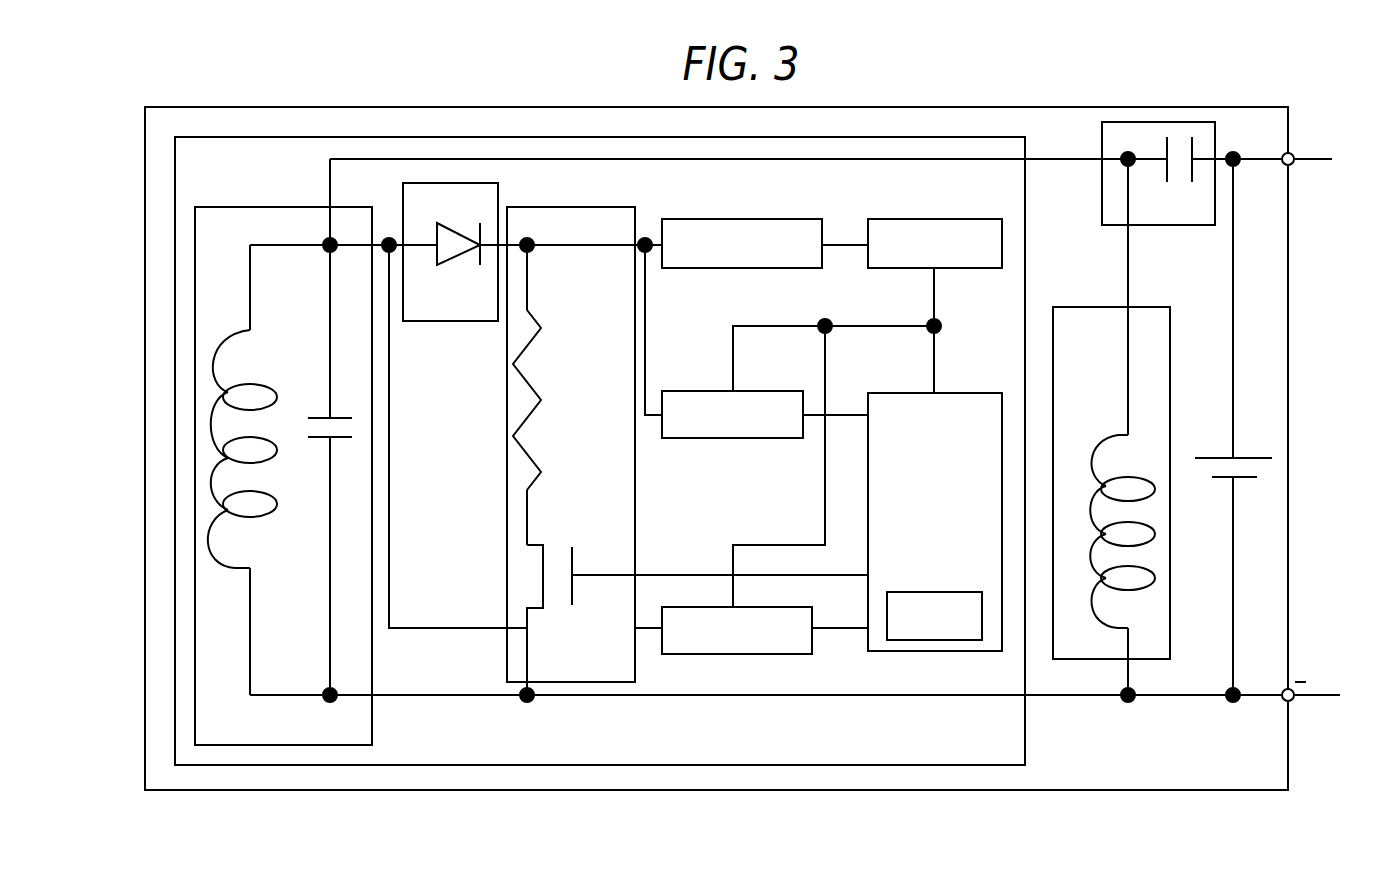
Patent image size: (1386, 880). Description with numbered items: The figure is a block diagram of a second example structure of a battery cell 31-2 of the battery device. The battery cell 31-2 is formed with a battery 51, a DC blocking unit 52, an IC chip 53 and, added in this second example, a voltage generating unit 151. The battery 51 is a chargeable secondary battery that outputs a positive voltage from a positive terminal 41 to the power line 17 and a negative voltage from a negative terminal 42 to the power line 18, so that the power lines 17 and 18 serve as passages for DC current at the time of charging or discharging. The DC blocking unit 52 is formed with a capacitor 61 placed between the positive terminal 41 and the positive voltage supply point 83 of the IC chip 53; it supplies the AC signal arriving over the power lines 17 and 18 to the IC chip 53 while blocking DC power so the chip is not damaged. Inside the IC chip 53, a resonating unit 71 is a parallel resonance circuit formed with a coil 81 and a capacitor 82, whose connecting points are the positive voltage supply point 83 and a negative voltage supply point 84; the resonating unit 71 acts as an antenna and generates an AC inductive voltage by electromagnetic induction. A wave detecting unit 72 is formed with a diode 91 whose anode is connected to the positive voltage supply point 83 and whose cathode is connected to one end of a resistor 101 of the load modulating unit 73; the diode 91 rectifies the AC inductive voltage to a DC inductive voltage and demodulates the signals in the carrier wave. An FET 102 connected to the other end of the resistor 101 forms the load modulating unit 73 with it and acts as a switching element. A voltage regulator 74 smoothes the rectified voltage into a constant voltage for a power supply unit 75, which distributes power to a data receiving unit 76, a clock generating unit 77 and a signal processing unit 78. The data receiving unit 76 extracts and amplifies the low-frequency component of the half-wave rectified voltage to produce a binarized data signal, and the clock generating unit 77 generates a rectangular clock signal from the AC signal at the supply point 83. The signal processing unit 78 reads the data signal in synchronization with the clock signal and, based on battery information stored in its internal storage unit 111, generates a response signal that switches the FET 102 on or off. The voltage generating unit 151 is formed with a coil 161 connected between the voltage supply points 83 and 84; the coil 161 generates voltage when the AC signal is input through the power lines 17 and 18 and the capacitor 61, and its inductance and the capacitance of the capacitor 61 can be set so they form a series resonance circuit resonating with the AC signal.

The battery cell 31-2 is at (1163, 790).
The IC chip 53 is at (1025, 747).
The resonating unit 71 is at (372, 731).
The coil 81 is at (237, 570).
The capacitor 82 is at (340, 438).
The positive voltage supply point 83 is at (325, 244).
The negative voltage supply point 84 is at (325, 694).
The wave detecting unit 72 is at (457, 322).
The diode 91 is at (456, 236).
The load modulating unit 73 is at (570, 700).
The resistor 101 is at (513, 390).
The FET 102 is at (560, 537).
The voltage regulator 74 is at (741, 219).
The power supply unit 75 is at (934, 219).
The data receiving unit 76 is at (691, 391).
The clock generating unit 77 is at (694, 607).
The signal processing unit 78 is at (970, 393).
The storage unit 111 is at (934, 641).
The DC blocking unit 52 is at (1178, 227).
The capacitor 61 is at (1167, 171).
The voltage generating unit 151 is at (1093, 307).
The coil 161 is at (1140, 553).
The battery 51 is at (1209, 458).
The positive terminal 41 is at (1282, 165).
The power line 17 is at (1310, 153).
The negative terminal 42 is at (1284, 701).
The power line 18 is at (1315, 700).